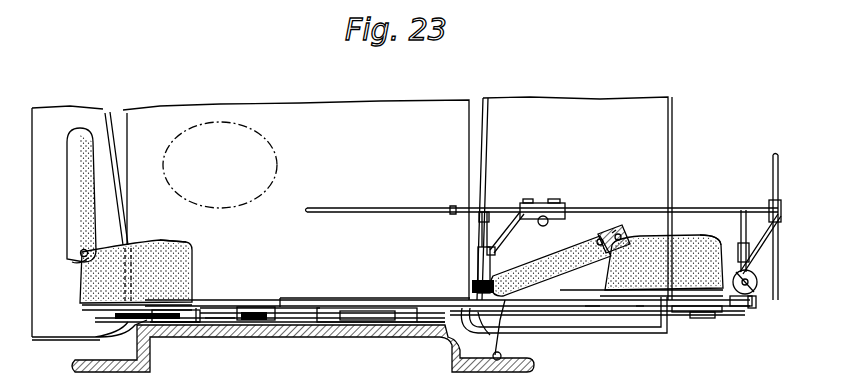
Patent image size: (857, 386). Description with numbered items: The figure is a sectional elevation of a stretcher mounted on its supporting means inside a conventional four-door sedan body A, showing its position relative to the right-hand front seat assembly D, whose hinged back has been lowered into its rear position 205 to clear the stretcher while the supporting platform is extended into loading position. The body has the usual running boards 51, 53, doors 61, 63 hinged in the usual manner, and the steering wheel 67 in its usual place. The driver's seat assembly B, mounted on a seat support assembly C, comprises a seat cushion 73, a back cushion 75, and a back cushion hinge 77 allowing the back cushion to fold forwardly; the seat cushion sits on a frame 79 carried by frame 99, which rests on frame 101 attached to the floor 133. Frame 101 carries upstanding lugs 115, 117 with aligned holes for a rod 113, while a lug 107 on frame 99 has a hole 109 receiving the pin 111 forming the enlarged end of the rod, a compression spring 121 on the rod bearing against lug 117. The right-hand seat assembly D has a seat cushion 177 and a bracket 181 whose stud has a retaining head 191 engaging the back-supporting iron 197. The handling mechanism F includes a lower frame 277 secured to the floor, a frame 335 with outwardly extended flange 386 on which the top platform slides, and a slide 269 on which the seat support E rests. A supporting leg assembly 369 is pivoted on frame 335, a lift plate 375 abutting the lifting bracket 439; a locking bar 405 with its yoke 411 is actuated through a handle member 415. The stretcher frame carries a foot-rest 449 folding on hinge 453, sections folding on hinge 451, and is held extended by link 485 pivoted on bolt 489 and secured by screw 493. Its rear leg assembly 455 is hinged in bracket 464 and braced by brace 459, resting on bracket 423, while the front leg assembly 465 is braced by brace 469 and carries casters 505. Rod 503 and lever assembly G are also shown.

The door 61 is at (62, 114).
The door 63 is at (565, 101).
The steering wheel 67 is at (220, 122).
The back cushion 75 is at (68, 170).
The seat cushion 73 is at (160, 243).
The back cushion hinge 77 is at (80, 258).
The frame 79 is at (88, 306).
The frame 99 is at (70, 340).
The running board 51 is at (75, 363).
The running board 53 is at (527, 370).
The rod 113 is at (197, 311).
The frame 101 is at (220, 318).
The compression spring 121 is at (252, 310).
The upstanding lug 115 is at (268, 318).
The frame 335 is at (322, 303).
The hole 109 is at (178, 324).
The lug 107 is at (227, 328).
The upstanding lug 117 is at (252, 325).
The pin 111 is at (290, 324).
The flange 386 is at (312, 322).
The lower frame 277 is at (425, 323).
The floor 133 is at (437, 305).
The lift plate 375 is at (522, 310).
The supporting leg assembly 369 is at (605, 335).
The rod 503 is at (355, 208).
The bracket 464 is at (450, 208).
The rear leg assembly 455 is at (470, 236).
The bracket 423 is at (473, 276).
The hinge 451 is at (545, 223).
The brace 459 is at (508, 258).
The bolt 489 is at (525, 203).
The link 485 is at (553, 203).
The screw 493 is at (560, 203).
The rear position 205 is at (555, 278).
The bracket 181 is at (628, 231).
The back-supporting iron 197 is at (597, 238).
The retaining head 191 is at (620, 236).
The seat cushion 177 is at (705, 245).
The slide 269 is at (556, 290).
The lifting bracket 439 is at (695, 314).
The handle member 415 is at (705, 318).
The locking bar 405 is at (755, 308).
The yoke 411 is at (765, 300).
The foot-rest 449 is at (775, 160).
The hinge 453 is at (775, 192).
The front leg assembly 465 is at (772, 241).
The brace 469 is at (762, 249).
The caster 505 is at (758, 283).
The sedan body A is at (364, 104).
The driver's seat assembly B is at (203, 252).
The seat support assembly C is at (205, 318).
The right-hand front seat assembly D is at (695, 236).
The seat support E is at (640, 310).
The handling mechanism F is at (590, 306).
The lever assembly G is at (612, 233).